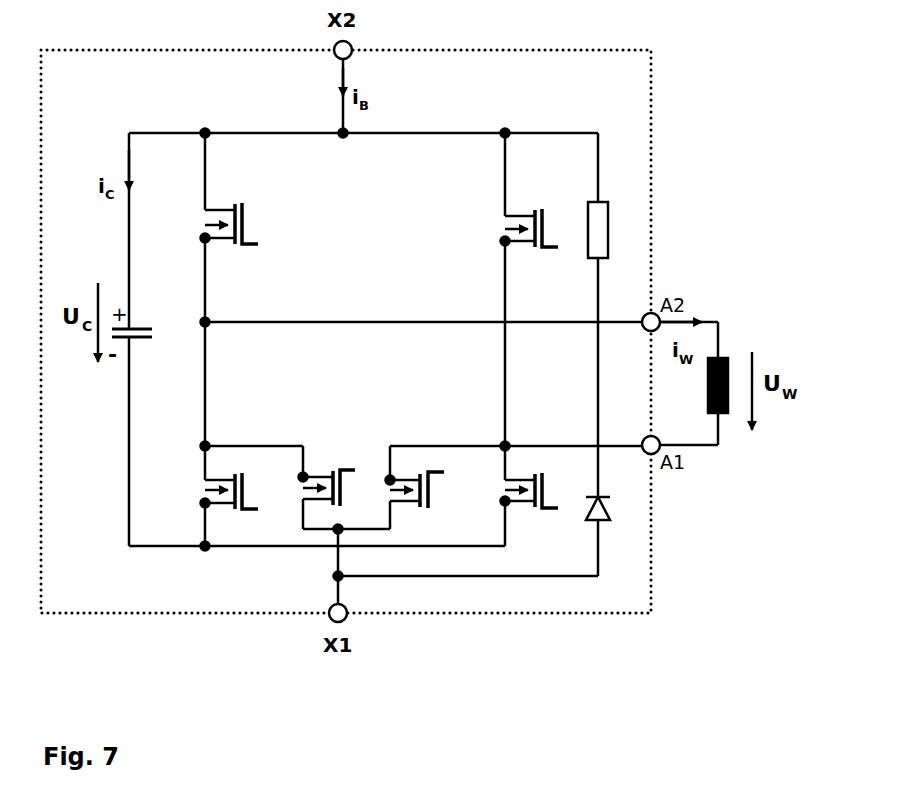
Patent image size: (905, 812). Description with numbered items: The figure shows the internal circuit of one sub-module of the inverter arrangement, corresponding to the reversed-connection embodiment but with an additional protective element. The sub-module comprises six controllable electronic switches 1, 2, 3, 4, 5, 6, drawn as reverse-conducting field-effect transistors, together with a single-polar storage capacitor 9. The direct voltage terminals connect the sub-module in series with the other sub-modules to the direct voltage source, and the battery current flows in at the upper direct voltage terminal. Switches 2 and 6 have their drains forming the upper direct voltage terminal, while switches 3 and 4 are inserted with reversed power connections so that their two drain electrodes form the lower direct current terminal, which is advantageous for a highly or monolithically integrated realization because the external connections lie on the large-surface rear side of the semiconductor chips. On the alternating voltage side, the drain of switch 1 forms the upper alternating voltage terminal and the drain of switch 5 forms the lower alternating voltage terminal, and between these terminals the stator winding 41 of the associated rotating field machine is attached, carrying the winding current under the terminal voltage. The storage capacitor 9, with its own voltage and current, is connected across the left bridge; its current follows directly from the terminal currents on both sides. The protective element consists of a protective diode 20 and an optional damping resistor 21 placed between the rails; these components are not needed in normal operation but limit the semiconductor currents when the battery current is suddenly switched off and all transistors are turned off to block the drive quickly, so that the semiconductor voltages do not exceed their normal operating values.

The controllable electronic switch 1 is at (217, 491).
The controllable electronic switch 2 is at (217, 223).
The controllable electronic switch 3 is at (415, 490).
The controllable electronic switch 4 is at (315, 488).
The controllable electronic switch 5 is at (519, 490).
The controllable electronic switch 6 is at (519, 228).
The storage capacitor 9 is at (142, 336).
The protective diode 20 is at (579, 524).
The damping resistor 21 is at (585, 216).
The stator winding 41 is at (733, 357).